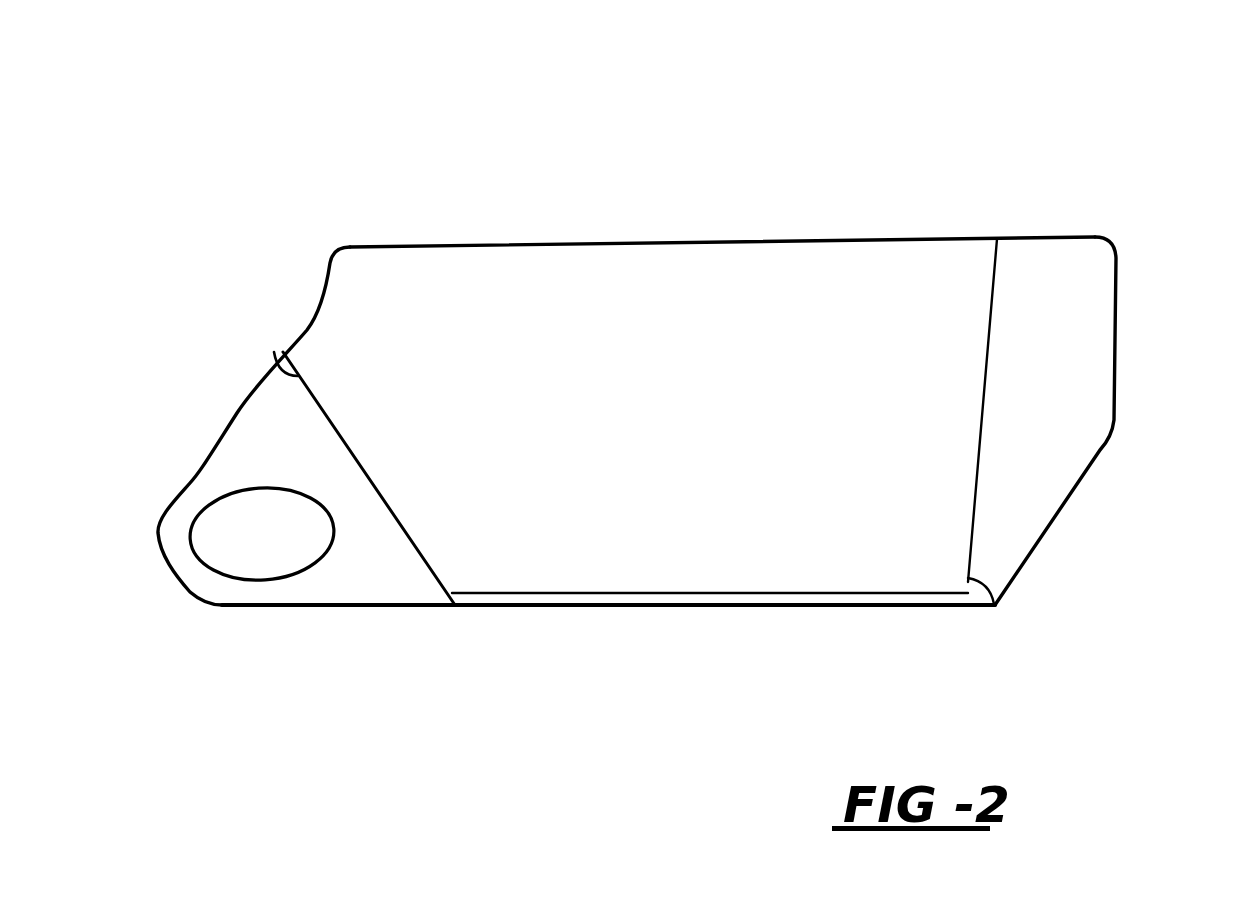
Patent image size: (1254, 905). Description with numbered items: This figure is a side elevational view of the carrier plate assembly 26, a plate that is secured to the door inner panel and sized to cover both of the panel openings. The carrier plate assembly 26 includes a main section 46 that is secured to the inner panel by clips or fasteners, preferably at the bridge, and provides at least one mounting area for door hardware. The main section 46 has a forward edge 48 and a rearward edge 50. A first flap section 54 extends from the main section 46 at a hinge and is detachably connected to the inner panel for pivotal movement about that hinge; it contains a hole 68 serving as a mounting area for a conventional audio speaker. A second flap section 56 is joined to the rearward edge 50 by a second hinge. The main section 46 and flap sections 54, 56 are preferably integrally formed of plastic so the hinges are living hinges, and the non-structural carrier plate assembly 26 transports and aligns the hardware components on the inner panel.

The carrier plate assembly 26 is at (660, 177).
The main section 46 is at (862, 266).
The forward edge 48 is at (274, 358).
The rearward edge 50 is at (995, 607).
The first flap section 54 is at (256, 421).
The second flap section 56 is at (1102, 357).
The hole 68 is at (223, 570).